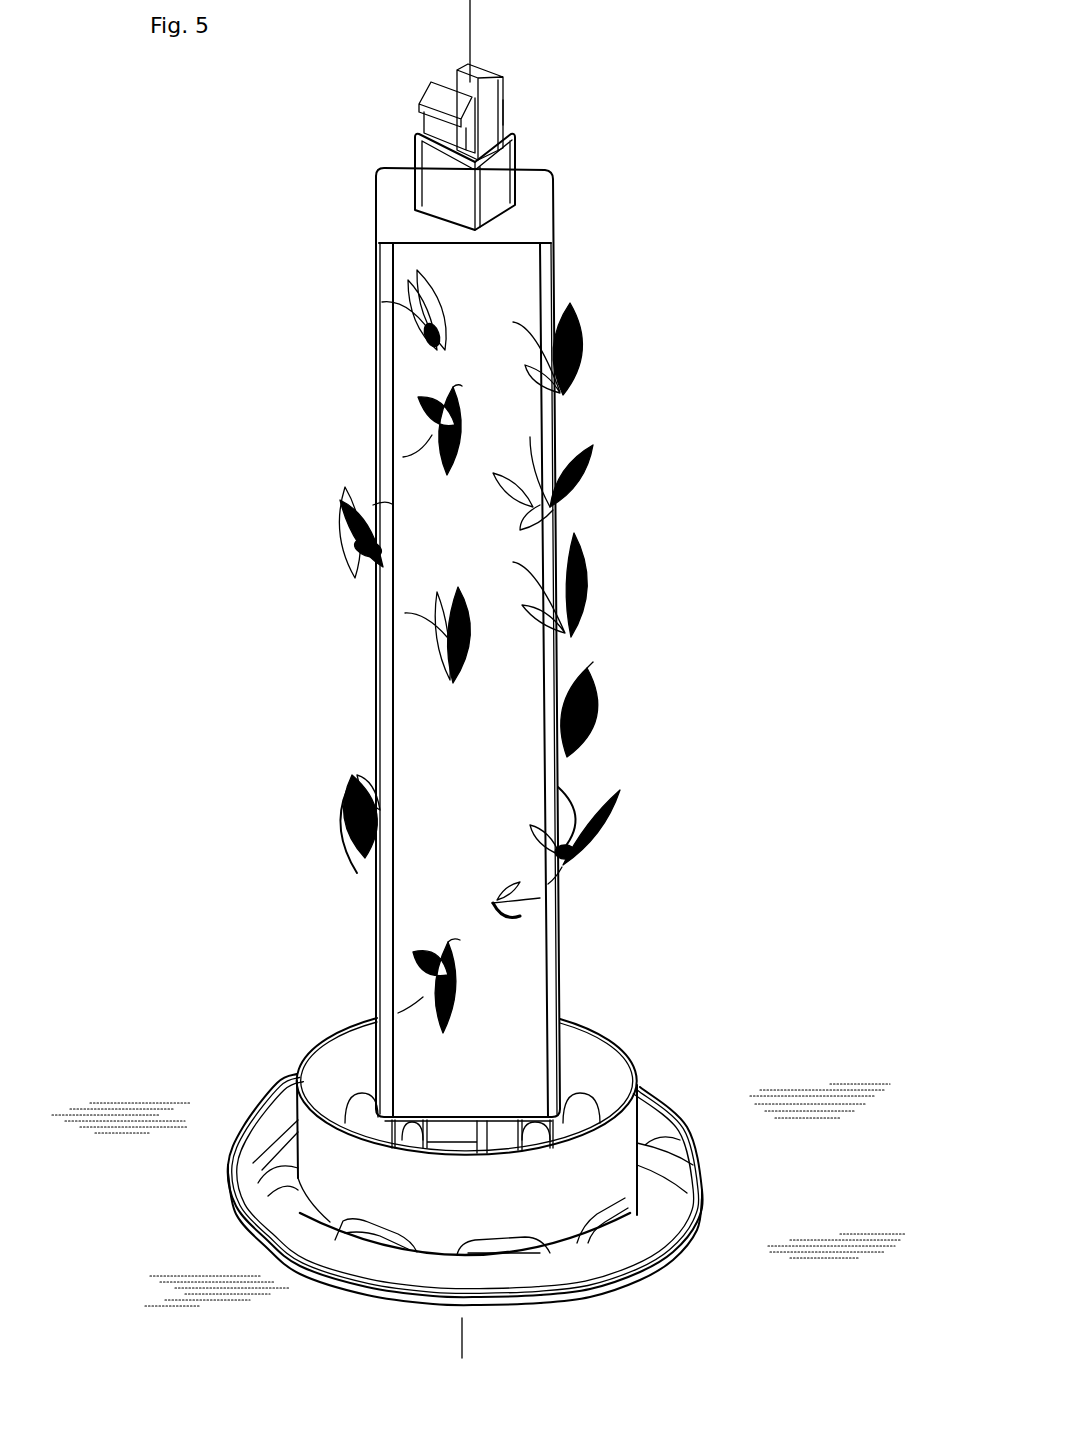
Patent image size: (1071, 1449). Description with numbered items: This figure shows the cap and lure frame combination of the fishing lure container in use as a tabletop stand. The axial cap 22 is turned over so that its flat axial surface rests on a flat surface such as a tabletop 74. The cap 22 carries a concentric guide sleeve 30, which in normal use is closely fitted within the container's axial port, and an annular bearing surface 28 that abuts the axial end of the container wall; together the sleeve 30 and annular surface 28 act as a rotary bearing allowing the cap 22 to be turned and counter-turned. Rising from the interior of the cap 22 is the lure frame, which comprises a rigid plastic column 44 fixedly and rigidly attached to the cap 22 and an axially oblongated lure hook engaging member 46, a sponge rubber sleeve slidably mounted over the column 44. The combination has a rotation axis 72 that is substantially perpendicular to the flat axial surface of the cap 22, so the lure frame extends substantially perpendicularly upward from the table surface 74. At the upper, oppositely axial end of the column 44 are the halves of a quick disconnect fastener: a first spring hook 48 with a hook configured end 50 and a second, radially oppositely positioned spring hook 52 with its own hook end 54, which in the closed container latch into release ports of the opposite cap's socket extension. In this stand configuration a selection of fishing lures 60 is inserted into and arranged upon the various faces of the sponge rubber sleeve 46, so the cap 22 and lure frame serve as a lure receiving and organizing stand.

The axial cap 22 is at (282, 1235).
The annular bearing surface 28 is at (692, 1127).
The concentric guide sleeve 30 is at (312, 1122).
The rigid plastic column 44 is at (497, 192).
The lure hook engaging member 46 is at (417, 717).
The first spring hook 48 is at (435, 122).
The hook configured oppositely axial end 50 is at (433, 92).
The second spring hook 52 is at (502, 114).
The oppositely axial hook end 54 is at (503, 88).
The fishing lures 60 is at (550, 508).
The rotation axis 72 is at (472, 15).
The tabletop 74 is at (173, 1086).